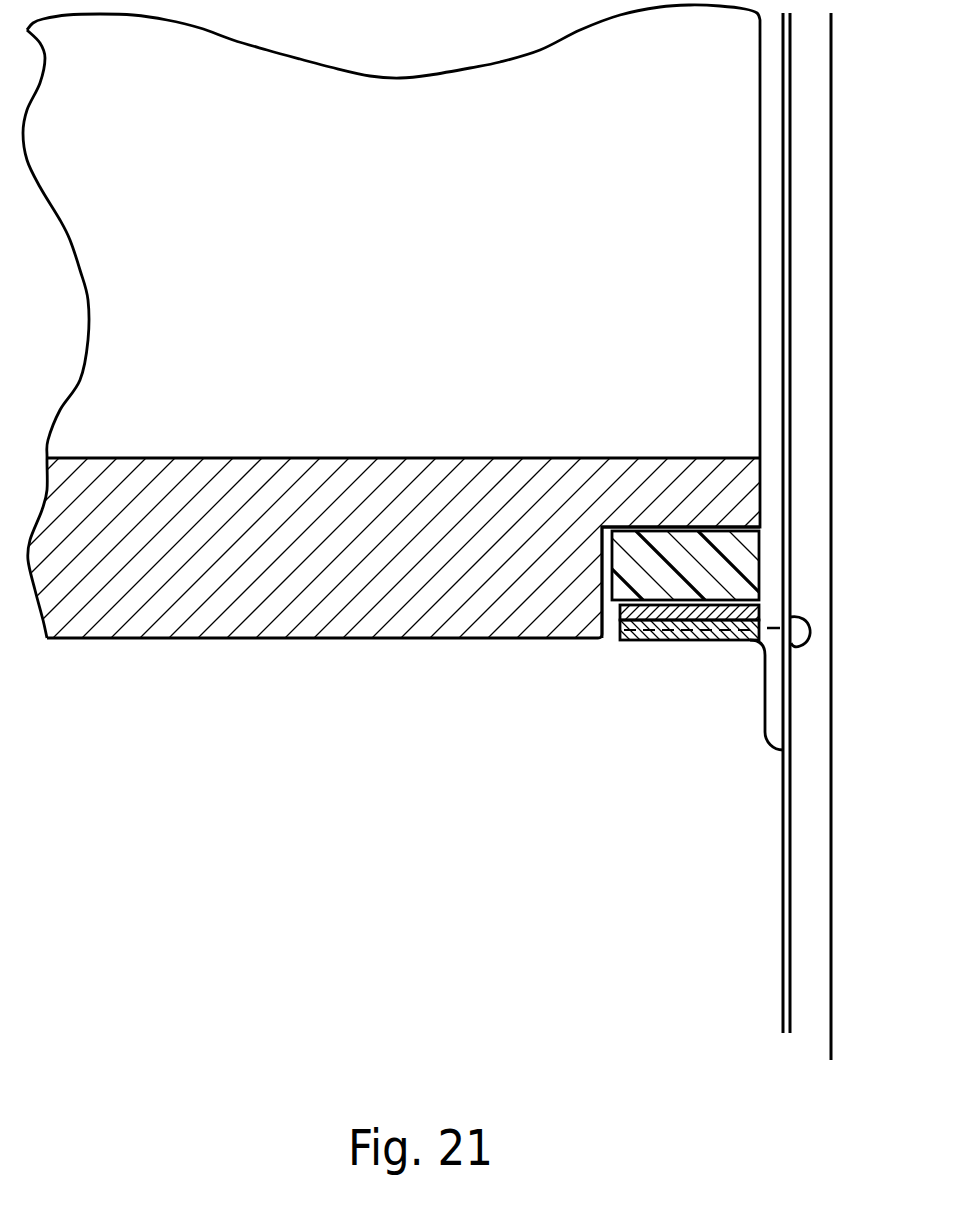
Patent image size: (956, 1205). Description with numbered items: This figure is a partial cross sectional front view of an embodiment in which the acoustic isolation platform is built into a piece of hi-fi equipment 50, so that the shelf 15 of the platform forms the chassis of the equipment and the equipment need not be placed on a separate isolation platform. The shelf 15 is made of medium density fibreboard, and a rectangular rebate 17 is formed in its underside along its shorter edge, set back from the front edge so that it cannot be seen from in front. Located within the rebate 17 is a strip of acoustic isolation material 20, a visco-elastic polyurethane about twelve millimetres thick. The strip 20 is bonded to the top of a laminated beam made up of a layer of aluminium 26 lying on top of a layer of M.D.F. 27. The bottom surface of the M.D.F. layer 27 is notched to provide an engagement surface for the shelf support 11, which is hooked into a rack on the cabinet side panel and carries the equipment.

The hi-fi equipment 50 is at (420, 230).
The shelf 15 is at (382, 507).
The rebate 17 is at (633, 527).
The strip of acoustic isolation material 20 is at (678, 562).
The layer of aluminium 26 is at (622, 622).
The layer of M.D.F. 27 is at (687, 640).
The shelf support 11 is at (773, 685).